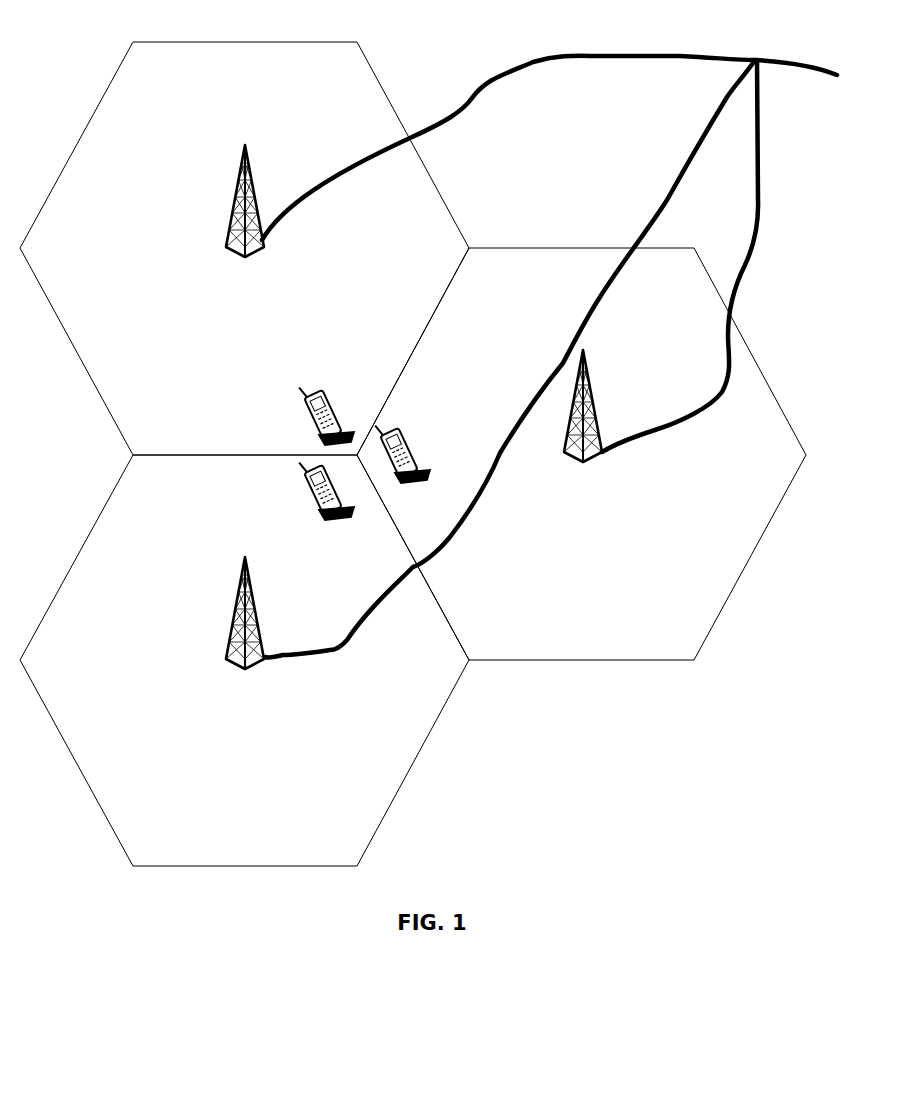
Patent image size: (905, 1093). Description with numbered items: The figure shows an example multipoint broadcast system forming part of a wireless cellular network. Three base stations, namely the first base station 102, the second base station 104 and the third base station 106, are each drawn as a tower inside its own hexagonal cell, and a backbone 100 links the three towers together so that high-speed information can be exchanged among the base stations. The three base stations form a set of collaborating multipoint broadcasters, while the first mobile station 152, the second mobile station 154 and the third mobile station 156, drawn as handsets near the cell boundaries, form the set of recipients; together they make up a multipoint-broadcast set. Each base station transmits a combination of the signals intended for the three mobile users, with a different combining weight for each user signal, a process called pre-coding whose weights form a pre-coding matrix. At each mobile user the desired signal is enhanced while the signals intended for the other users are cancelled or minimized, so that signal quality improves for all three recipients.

The backbone 100 is at (549, 340).
The base station 1 102 is at (231, 230).
The base station 2 104 is at (594, 434).
The base station 3 106 is at (232, 639).
The mobile station 1 152 is at (294, 402).
The mobile station 2 154 is at (424, 453).
The mobile station 3 156 is at (299, 503).